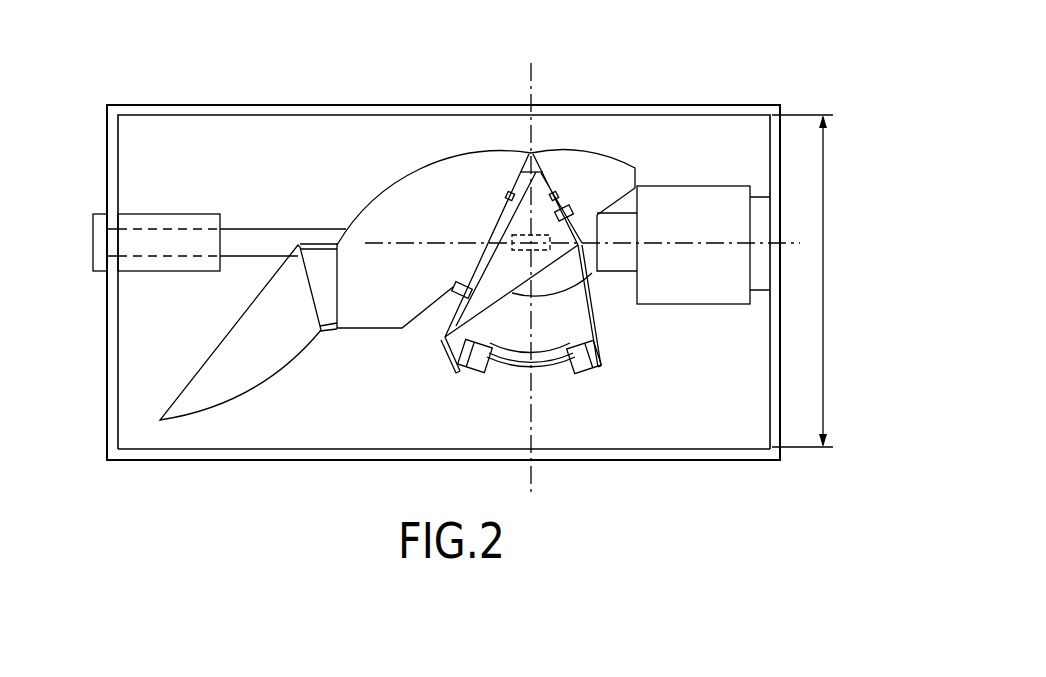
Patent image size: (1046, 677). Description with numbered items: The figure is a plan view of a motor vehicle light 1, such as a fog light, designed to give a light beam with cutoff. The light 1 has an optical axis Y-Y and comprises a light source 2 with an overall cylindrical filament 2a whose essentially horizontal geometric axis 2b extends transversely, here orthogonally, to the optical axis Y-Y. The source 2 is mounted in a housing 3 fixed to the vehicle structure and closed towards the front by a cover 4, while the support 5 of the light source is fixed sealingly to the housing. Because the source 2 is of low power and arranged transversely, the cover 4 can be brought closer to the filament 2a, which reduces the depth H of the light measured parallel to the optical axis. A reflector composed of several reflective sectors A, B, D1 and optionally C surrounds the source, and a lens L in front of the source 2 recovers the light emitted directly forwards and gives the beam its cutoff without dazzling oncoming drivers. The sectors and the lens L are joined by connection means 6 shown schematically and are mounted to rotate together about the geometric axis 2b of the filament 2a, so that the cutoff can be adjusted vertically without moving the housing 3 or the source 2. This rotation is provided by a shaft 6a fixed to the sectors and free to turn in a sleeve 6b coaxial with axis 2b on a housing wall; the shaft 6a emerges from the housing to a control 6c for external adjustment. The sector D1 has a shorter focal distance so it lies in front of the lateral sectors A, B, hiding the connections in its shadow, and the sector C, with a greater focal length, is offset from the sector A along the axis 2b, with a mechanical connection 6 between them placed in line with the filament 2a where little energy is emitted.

The light 1 is at (164, 96).
The light source 2 is at (540, 213).
The filament 2a is at (527, 238).
The geometric axis 2b is at (465, 243).
The housing 3 is at (107, 148).
The cover 4 is at (184, 462).
The support 5 is at (664, 181).
The connection means 6 is at (320, 243).
The shaft 6a is at (257, 237).
The sleeve 6b is at (175, 220).
The control 6c is at (92, 237).
The reflective sector A is at (392, 210).
The reflective sector B is at (600, 170).
The reflective sector C is at (248, 337).
The reflective sector D1 is at (467, 310).
The depth H is at (825, 283).
The lens L is at (500, 381).
The optical axis Y is at (532, 278).